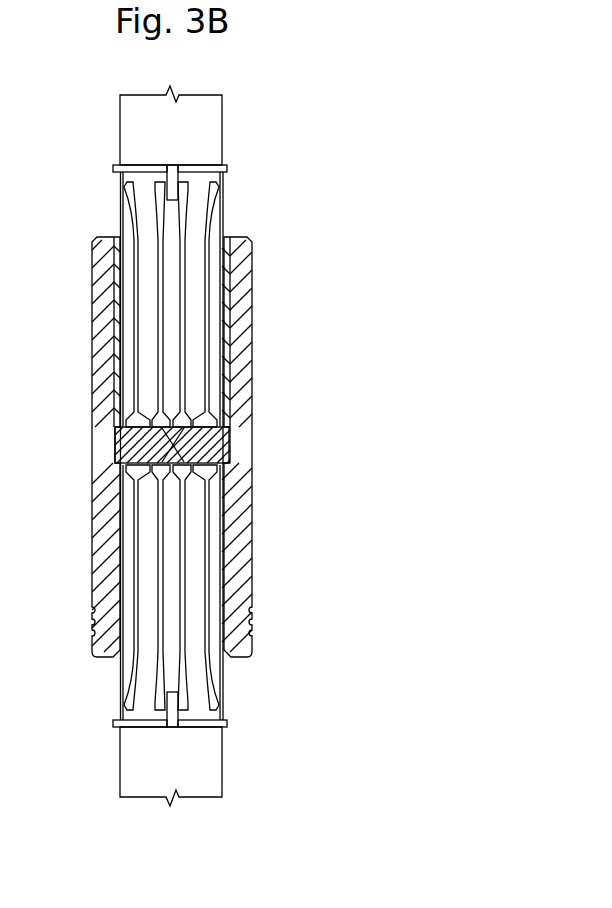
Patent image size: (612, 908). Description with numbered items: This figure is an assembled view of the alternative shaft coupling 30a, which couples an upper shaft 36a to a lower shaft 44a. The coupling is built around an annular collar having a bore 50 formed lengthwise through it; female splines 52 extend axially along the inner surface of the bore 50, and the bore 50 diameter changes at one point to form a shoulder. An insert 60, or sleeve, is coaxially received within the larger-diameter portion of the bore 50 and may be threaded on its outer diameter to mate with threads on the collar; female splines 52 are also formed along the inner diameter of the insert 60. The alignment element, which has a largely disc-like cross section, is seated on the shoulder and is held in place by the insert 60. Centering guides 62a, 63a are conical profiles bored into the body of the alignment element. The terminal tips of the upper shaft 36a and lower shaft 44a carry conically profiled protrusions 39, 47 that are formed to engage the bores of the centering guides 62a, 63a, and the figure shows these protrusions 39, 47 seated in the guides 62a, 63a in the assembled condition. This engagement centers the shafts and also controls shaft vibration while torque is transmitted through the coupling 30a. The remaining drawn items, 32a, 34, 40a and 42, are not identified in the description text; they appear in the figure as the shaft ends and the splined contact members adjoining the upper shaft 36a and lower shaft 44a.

The shaft coupling 30a is at (213, 446).
The first conductor 32a is at (197, 142).
The outer contact sleeve 34 is at (217, 203).
The upper shaft 36a is at (250, 276).
The protrusion 39 is at (176, 428).
The second conductor 40a is at (199, 775).
The contact finger 42 is at (215, 672).
The lower shaft 44a is at (161, 598).
The protrusion 47 is at (174, 464).
The bore 50 is at (118, 657).
The female splines 52 is at (208, 225).
The insert 60 is at (225, 313).
The centering guide 62a is at (200, 437).
The centering guide 63a is at (206, 457).